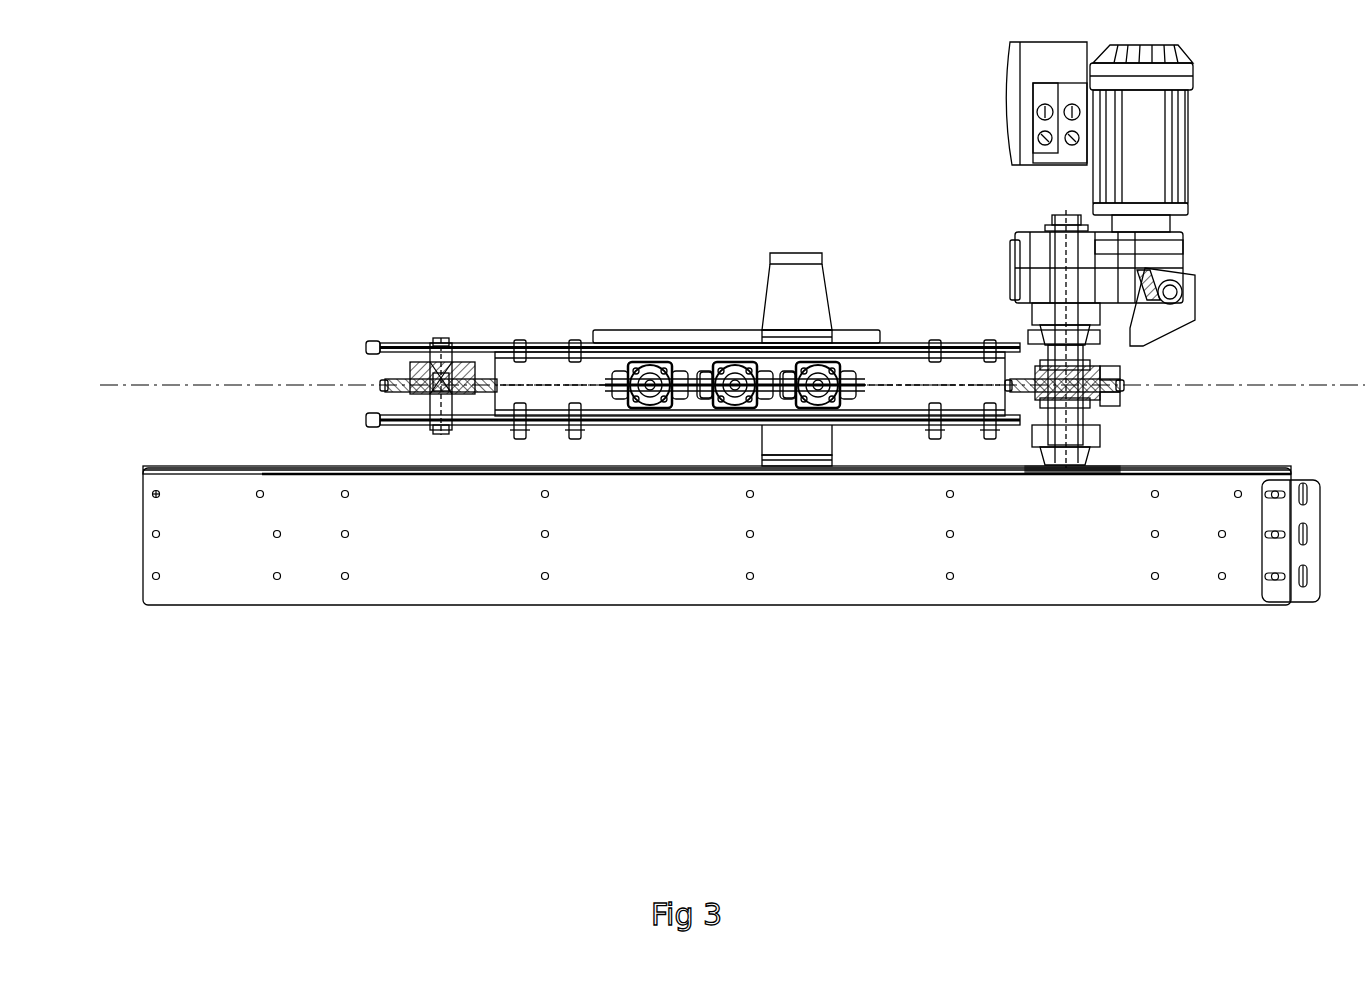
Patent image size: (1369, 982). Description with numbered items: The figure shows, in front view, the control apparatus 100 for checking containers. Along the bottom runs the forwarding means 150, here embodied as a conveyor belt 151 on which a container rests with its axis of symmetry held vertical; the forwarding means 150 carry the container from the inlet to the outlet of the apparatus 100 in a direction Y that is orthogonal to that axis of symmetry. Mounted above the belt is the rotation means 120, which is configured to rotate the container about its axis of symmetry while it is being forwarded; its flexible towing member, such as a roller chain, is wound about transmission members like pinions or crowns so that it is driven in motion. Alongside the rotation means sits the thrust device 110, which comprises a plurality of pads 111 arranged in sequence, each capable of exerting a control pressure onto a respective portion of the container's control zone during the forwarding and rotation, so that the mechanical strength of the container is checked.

The control apparatus 100 is at (632, 243).
The thrust device 110 is at (631, 316).
The pads 111 is at (667, 343).
The rotation means 120 is at (451, 319).
The forwarding means 150 is at (386, 604).
The conveyor belt 151 is at (656, 468).